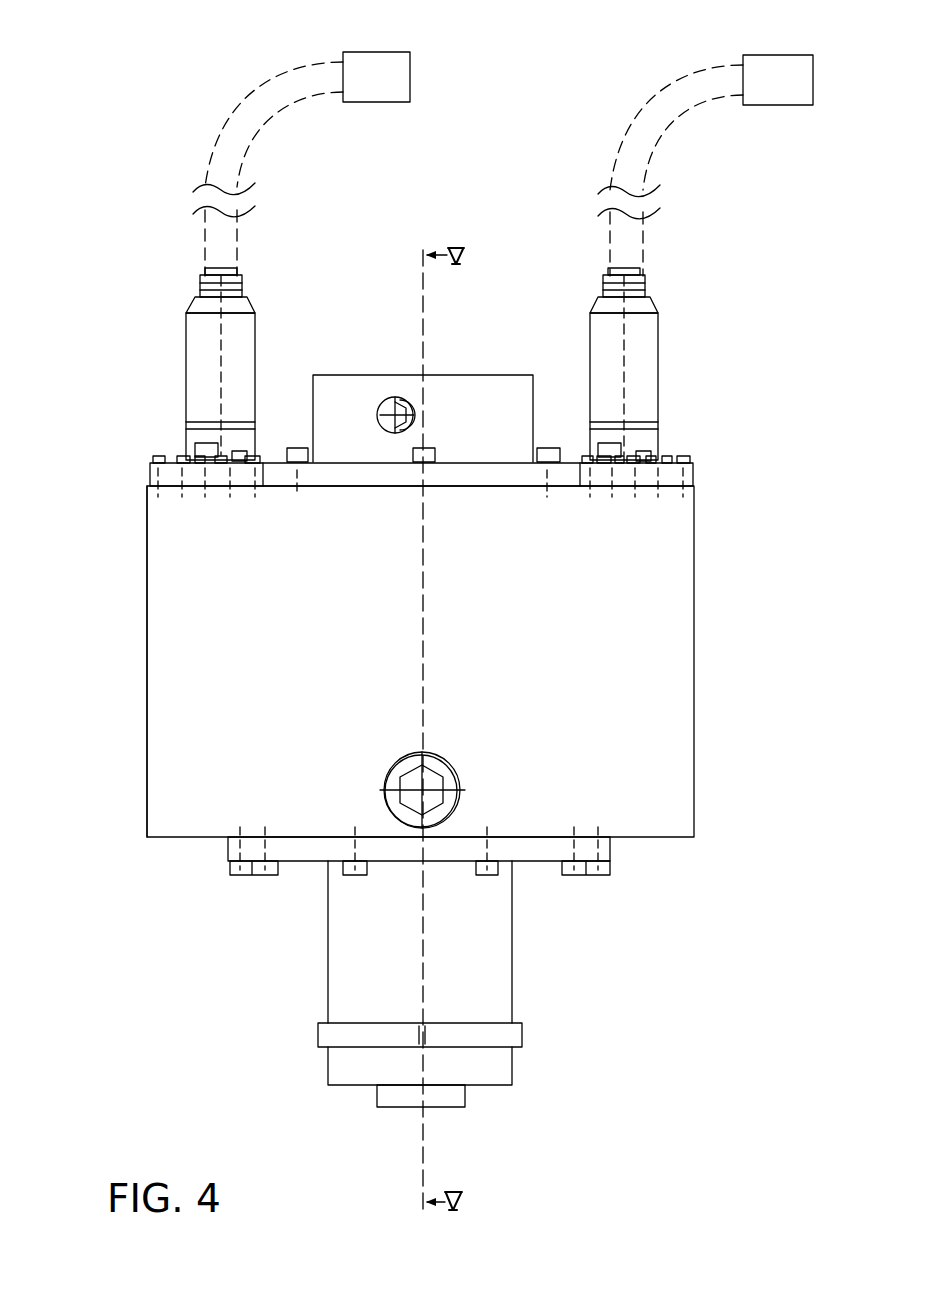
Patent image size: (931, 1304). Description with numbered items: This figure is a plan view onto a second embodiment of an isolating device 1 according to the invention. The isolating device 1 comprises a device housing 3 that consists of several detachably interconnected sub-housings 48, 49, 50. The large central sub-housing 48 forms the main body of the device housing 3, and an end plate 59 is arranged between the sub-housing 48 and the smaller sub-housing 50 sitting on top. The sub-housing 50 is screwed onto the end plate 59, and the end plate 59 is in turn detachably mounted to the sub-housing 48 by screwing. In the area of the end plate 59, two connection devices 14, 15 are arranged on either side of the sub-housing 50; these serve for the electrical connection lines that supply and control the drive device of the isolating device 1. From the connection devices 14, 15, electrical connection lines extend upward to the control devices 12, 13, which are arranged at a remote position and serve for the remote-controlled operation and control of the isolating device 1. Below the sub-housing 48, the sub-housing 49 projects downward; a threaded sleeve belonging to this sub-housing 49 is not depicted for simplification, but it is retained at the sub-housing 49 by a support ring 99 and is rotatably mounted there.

The isolating device 1 is at (116, 455).
The device housing 3 is at (720, 655).
The control device 12 is at (410, 80).
The control device 13 is at (813, 87).
The connection device 14 is at (243, 345).
The connection device 15 is at (647, 345).
The sub-housing 48 is at (146, 645).
The sub-housing 49 is at (497, 950).
The sub-housing 50 is at (485, 383).
The end plate 59 is at (487, 478).
The support ring 99 is at (508, 1037).